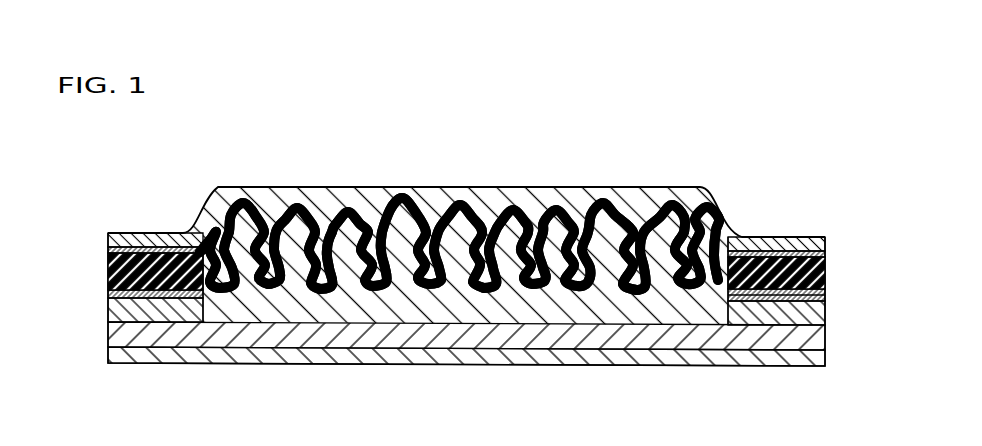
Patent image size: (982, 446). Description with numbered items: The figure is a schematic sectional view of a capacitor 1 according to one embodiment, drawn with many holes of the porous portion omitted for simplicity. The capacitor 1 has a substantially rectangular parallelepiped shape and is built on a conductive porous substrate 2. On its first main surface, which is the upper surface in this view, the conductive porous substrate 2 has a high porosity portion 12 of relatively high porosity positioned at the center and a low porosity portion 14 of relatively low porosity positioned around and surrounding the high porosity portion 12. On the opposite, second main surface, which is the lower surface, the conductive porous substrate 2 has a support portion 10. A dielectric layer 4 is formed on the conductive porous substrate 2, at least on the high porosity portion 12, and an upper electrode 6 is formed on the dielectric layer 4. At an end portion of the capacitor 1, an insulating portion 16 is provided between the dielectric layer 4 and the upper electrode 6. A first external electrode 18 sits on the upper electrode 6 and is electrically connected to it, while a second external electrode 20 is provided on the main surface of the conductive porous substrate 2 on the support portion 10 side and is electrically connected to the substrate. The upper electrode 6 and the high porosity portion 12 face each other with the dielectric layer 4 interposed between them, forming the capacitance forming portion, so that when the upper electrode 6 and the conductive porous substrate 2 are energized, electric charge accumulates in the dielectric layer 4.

The capacitor 1 is at (159, 210).
The conductive porous substrate 2 is at (866, 272).
The dielectric layer 4 is at (668, 207).
The upper electrode 6 is at (567, 215).
The support portion 10 is at (797, 339).
The high porosity portion 12 is at (703, 287).
The low porosity portion 14 is at (790, 313).
The insulating portion 16 is at (775, 260).
The first external electrode 18 is at (435, 207).
The second external electrode 20 is at (737, 359).